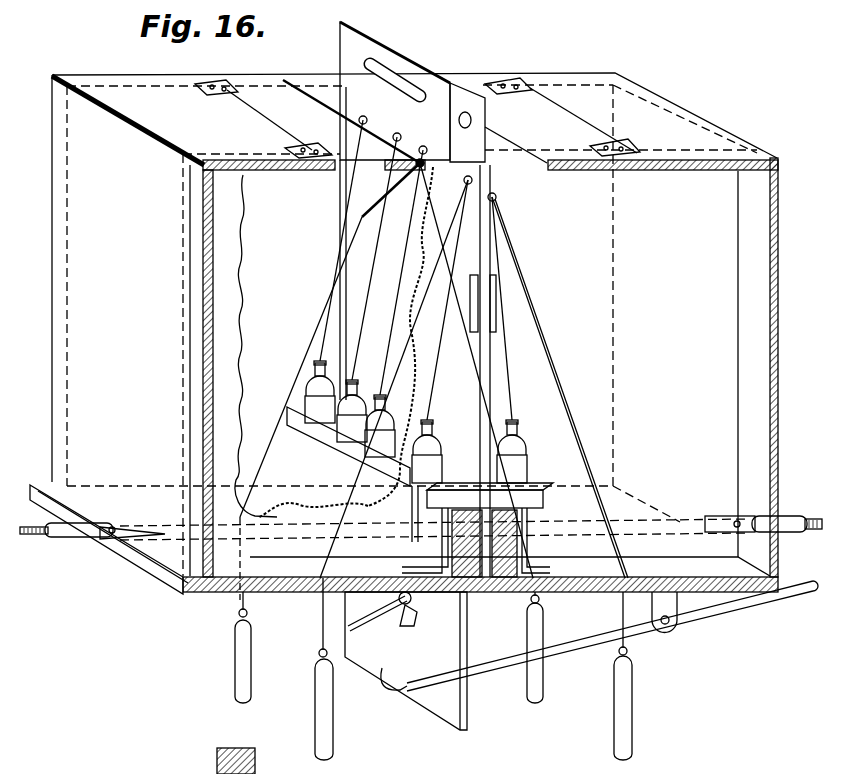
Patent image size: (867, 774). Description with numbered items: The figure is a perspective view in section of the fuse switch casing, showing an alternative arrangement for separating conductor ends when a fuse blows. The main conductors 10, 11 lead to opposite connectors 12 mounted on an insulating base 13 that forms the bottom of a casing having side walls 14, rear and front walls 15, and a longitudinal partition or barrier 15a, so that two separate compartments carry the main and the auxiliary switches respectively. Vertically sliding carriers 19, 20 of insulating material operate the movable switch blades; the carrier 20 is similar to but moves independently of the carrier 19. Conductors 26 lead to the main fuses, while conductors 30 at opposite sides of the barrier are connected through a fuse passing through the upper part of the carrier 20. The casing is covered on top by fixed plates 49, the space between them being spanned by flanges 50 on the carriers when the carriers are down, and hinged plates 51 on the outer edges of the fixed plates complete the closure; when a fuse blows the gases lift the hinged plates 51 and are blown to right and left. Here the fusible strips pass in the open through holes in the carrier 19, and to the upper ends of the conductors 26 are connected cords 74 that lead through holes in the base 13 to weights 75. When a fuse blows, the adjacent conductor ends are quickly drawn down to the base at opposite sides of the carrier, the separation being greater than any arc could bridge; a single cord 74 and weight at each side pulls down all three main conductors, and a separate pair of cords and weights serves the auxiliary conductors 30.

The main conductor 10 is at (64, 531).
The main conductor 11 is at (792, 525).
The connector 12 is at (260, 517).
The insulating base 13 is at (593, 580).
The side wall 14 is at (760, 367).
The rear and front wall 15 is at (177, 145).
The longitudinal partition or barrier 15a is at (243, 243).
The vertically sliding carrier 19 is at (352, 311).
The vertically sliding carrier 20 is at (494, 356).
The conductor 26 is at (406, 252).
The conductor 30 is at (432, 378).
The fixed plate 49 is at (562, 117).
The flange 50 is at (334, 74).
The hinged plate 51 is at (685, 119).
The cord 74 is at (288, 421).
The weight 75 is at (250, 646).